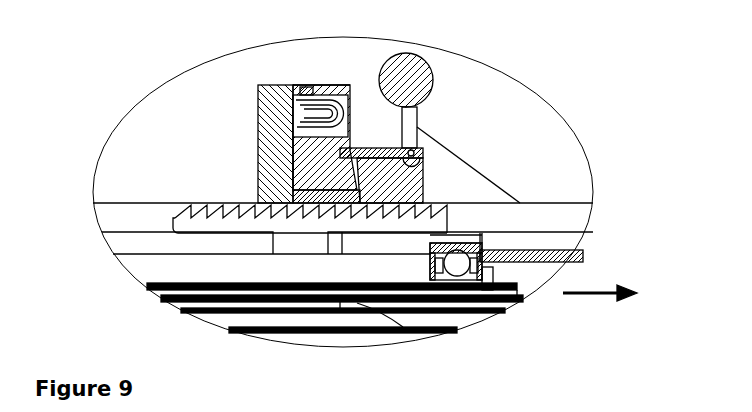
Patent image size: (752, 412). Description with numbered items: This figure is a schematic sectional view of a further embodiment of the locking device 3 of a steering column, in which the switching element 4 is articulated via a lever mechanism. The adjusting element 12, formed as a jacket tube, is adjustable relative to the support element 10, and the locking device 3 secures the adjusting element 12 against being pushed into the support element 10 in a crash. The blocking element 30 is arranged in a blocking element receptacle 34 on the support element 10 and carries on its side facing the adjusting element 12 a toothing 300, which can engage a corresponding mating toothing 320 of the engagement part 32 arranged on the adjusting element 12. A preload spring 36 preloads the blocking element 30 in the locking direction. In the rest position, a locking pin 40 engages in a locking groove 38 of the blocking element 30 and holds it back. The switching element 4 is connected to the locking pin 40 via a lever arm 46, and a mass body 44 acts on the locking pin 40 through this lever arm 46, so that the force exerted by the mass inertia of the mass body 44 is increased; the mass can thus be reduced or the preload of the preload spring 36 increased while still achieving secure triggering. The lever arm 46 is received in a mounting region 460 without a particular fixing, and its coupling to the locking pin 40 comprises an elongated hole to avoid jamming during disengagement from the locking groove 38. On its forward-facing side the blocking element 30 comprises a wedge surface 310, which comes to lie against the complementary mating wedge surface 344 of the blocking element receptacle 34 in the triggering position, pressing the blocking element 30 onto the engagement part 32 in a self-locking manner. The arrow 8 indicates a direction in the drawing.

The locking device 3 is at (202, 107).
The switching element 4 is at (411, 89).
The direction of movement 8 is at (592, 296).
The support element 10 is at (483, 205).
The adjusting element 12 is at (150, 245).
The blocking element 30 is at (297, 135).
The engagement part 32 is at (178, 222).
The blocking element receptacle 34 is at (257, 100).
The preload spring 36 is at (321, 97).
The locking groove 38 is at (293, 147).
The locking pin 40 is at (338, 148).
The mass body 44 is at (407, 54).
The lever arm 46 is at (420, 58).
The toothing 300 is at (245, 210).
The wedge surface 310 is at (418, 127).
The mating toothing 320 is at (183, 206).
The mating wedge surface 344 is at (358, 188).
The mounting region 460 is at (421, 178).